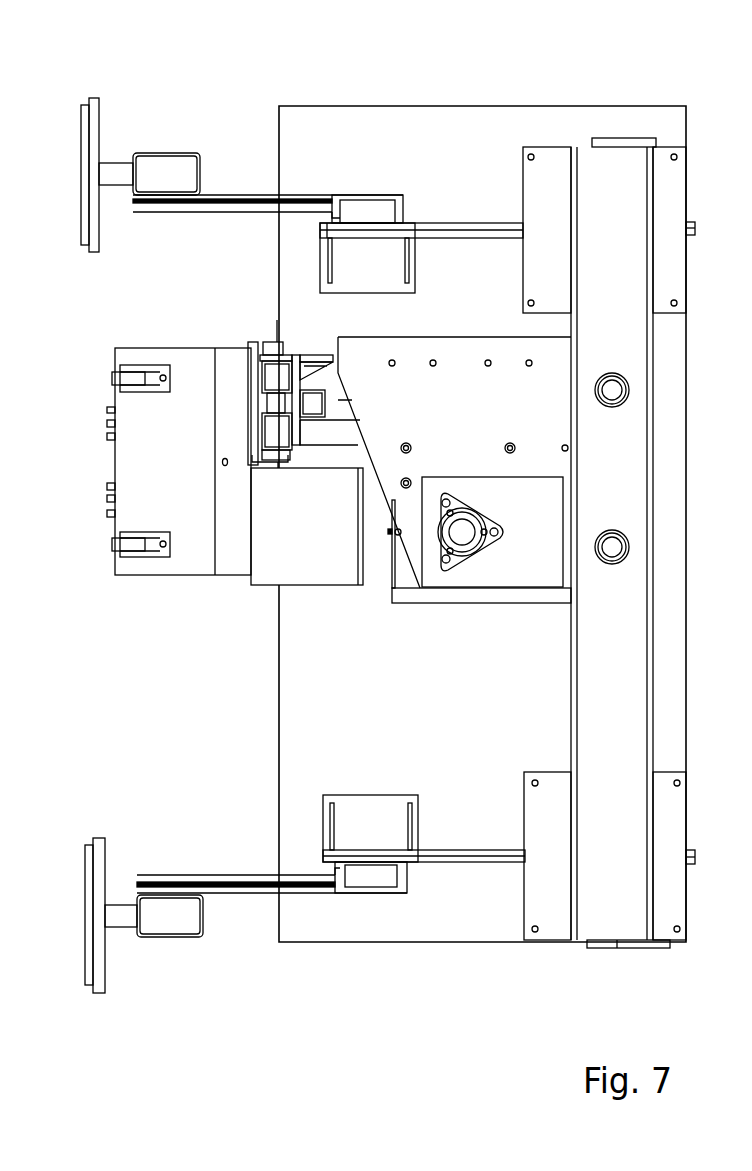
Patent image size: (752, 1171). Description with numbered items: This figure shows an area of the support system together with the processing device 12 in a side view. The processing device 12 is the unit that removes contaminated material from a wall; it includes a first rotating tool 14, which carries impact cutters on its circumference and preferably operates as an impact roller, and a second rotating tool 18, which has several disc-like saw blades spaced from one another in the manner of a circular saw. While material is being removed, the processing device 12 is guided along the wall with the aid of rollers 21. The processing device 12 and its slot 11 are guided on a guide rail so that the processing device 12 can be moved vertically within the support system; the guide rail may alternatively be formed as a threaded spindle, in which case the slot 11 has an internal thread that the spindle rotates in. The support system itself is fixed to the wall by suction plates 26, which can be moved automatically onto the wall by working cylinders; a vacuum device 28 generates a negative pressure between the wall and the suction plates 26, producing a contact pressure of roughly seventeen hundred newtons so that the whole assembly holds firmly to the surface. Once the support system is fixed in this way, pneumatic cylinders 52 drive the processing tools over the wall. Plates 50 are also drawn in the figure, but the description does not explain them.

The processing device 12 is at (507, 84).
The guide plate 50 is at (545, 172).
The suction plates 26 is at (84, 110).
The vacuum device 28 is at (356, 275).
The slot 11 is at (453, 340).
The rollers 21 is at (112, 378).
The second rotating tool 18 is at (107, 422).
The rotating tool 14 is at (107, 498).
The pneumatic cylinders 52 is at (333, 457).